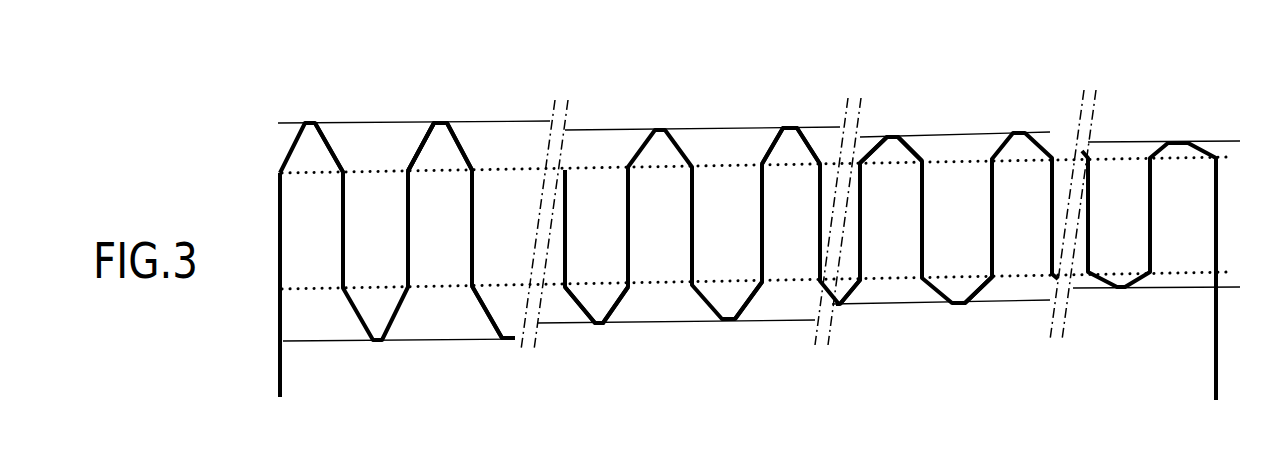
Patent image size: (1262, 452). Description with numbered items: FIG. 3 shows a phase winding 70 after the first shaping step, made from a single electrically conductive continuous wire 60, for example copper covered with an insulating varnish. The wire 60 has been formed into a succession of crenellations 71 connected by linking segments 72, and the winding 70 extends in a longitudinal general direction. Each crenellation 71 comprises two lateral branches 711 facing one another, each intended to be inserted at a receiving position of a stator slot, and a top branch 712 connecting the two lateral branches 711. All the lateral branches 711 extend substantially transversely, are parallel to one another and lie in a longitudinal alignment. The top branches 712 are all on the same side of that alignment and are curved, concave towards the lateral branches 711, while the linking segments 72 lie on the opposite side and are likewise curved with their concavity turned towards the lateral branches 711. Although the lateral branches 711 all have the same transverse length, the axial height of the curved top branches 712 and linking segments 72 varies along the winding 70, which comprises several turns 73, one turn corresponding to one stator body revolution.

The electrically conductive continuous wire 60 is at (280, 251).
The phase winding 70 is at (710, 108).
The crenellation 71 is at (782, 285).
The linking segment 72 is at (582, 305).
The turn 73 is at (471, 107).
The lateral branch 711 is at (342, 203).
The top branch 712 is at (420, 143).